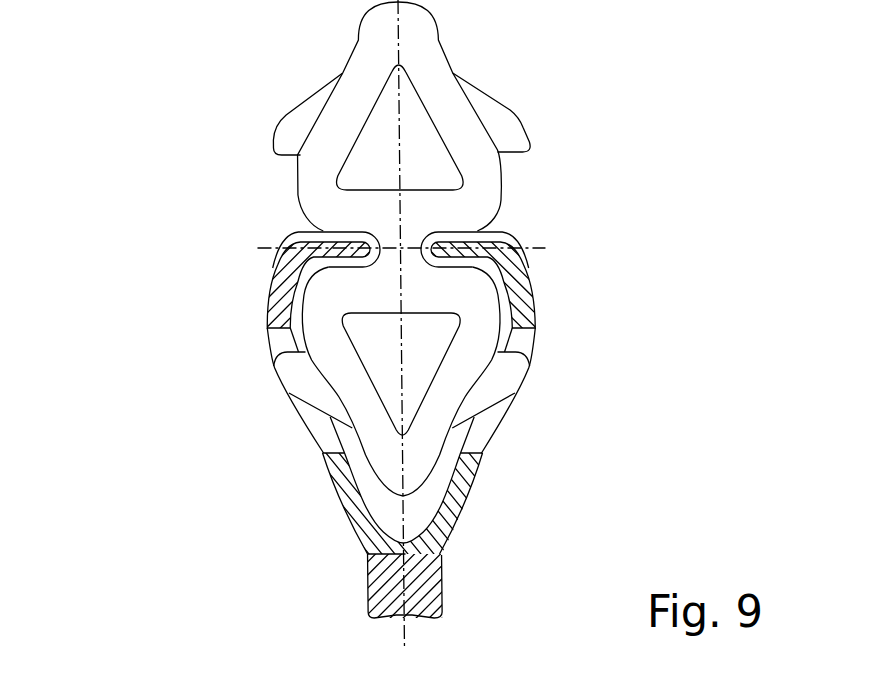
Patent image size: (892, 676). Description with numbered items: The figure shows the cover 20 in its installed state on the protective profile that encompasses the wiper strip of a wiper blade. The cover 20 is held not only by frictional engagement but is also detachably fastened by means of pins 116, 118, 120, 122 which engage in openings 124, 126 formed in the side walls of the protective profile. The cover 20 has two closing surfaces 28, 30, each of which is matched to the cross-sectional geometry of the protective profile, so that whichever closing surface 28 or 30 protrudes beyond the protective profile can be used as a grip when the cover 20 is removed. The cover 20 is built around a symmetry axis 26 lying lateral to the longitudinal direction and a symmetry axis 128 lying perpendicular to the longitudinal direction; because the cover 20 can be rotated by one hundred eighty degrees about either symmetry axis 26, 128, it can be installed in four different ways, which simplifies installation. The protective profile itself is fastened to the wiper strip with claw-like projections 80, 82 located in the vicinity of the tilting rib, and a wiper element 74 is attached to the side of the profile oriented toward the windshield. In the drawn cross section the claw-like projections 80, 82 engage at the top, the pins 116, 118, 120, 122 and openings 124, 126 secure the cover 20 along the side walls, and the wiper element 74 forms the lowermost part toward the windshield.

The cover 20 is at (512, 99).
The closing surface 28 is at (367, 53).
The pin 120 is at (290, 142).
The pin 122 is at (512, 135).
The claw-like projection 82 is at (297, 232).
The claw-like projection 80 is at (492, 223).
The symmetry axis 26 is at (456, 392).
The wiper element 74 is at (423, 585).
The closing surface 30 is at (322, 313).
The symmetry axis 128 is at (403, 515).
The pin 116 is at (298, 373).
The pin 118 is at (508, 370).
The opening 124 is at (322, 428).
The opening 126 is at (482, 438).